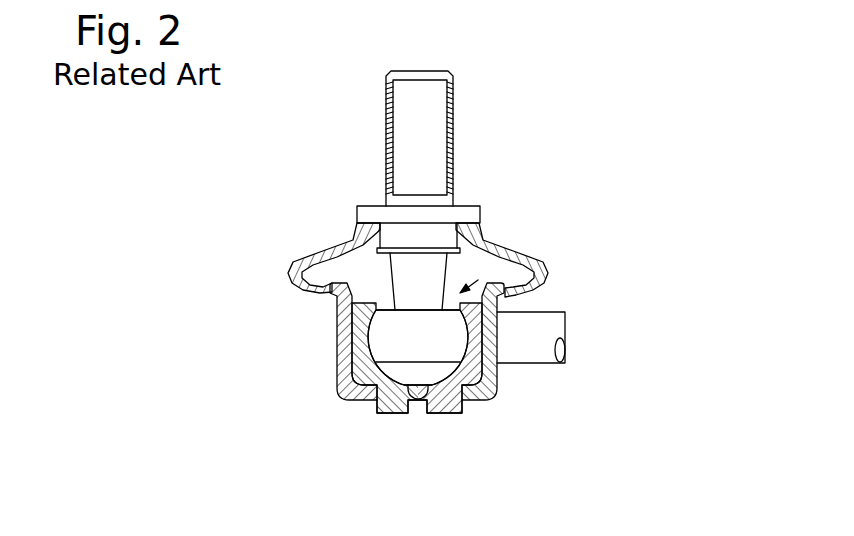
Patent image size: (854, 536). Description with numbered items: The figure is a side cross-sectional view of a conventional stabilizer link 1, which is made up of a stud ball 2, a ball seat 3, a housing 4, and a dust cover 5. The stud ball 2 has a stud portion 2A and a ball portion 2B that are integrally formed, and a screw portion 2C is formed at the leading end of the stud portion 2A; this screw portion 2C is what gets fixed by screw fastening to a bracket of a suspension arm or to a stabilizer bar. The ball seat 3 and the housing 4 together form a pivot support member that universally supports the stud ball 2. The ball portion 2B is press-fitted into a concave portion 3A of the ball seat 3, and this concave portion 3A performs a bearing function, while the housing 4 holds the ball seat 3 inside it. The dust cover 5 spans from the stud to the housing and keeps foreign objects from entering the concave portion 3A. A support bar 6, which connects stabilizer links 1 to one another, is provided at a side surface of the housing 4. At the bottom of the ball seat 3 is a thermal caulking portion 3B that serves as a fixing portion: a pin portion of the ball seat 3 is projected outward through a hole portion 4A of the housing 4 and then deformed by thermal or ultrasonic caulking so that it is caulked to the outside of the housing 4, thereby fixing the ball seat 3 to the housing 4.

The stabilizer link 1 is at (590, 114).
The stud ball 2 is at (425, 258).
The stud portion 2A is at (401, 131).
The ball portion 2B is at (421, 353).
The screw portion 2C is at (455, 99).
The ball seat 3 is at (462, 327).
The concave portion 3A is at (547, 274).
The thermal caulking portion 3B is at (413, 415).
The housing 4 is at (383, 381).
The hole portion 4A is at (376, 412).
The dust cover 5 is at (323, 253).
The support bar 6 is at (546, 327).